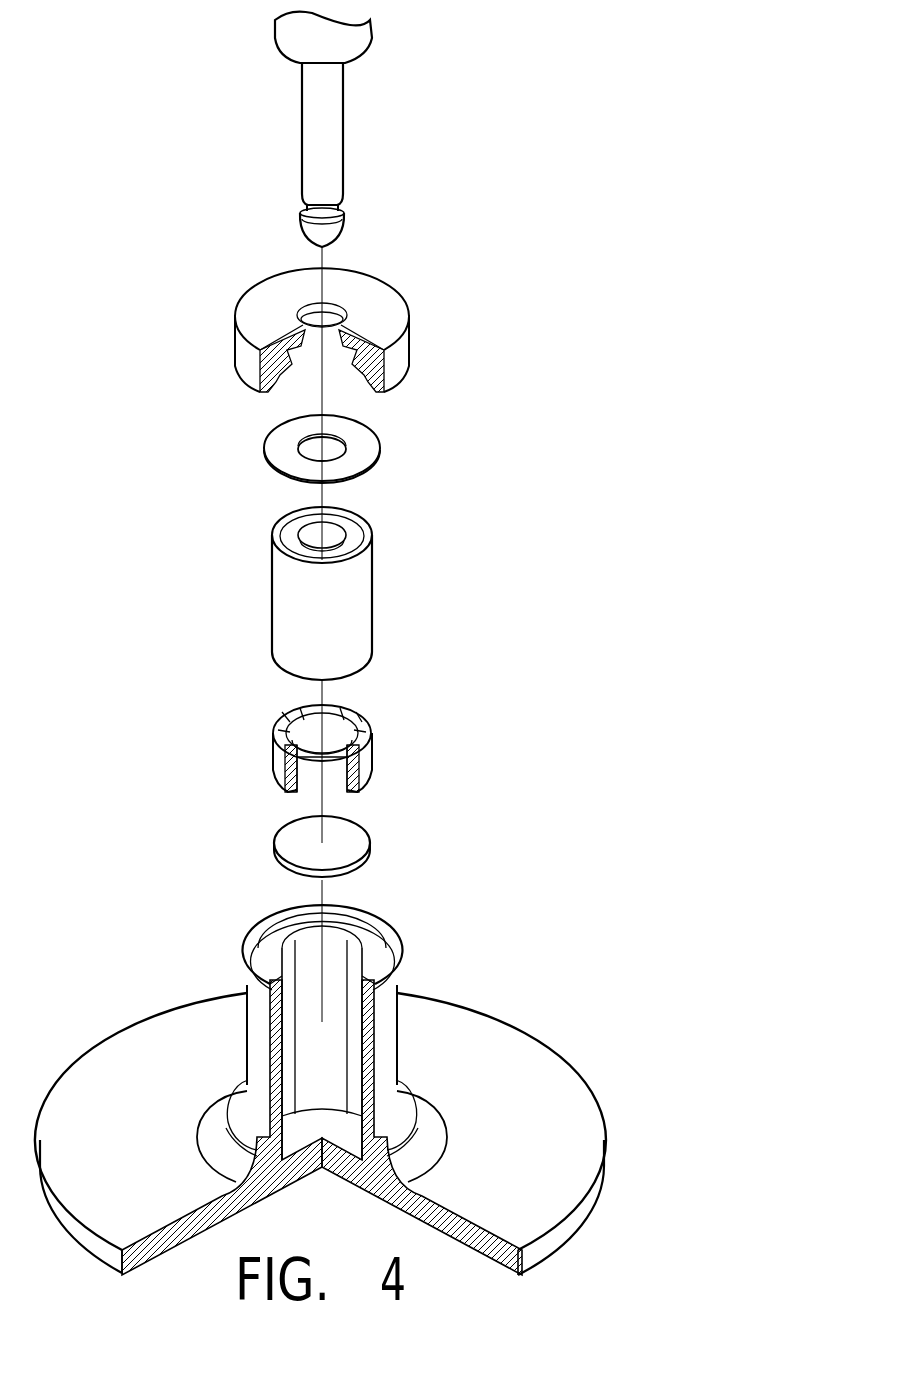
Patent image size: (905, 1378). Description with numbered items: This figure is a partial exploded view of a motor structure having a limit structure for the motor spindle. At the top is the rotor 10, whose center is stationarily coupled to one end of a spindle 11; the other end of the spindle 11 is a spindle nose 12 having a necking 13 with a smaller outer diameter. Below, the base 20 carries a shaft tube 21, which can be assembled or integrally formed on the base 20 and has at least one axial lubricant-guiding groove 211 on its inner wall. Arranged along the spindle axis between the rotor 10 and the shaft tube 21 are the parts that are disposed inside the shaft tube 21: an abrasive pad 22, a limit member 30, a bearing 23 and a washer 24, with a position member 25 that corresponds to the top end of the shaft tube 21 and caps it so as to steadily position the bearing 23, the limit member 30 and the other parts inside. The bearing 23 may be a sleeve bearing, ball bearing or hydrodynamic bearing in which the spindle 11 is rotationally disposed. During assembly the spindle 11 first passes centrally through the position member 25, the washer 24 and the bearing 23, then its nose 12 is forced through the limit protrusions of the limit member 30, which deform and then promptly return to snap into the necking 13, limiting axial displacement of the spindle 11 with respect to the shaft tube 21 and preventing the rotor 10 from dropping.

The rotor 10 is at (355, 42).
The spindle 11 is at (331, 127).
The spindle nose 12 is at (305, 230).
The necking 13 is at (331, 212).
The base 20 is at (497, 1047).
The shaft tube 21 is at (385, 1058).
The axial lubricant-guiding groove 211 is at (283, 943).
The abrasive pad 22 is at (357, 843).
The bearing 23 is at (357, 608).
The washer 24 is at (380, 440).
The position member 25 is at (395, 305).
The limit member 30 is at (364, 760).